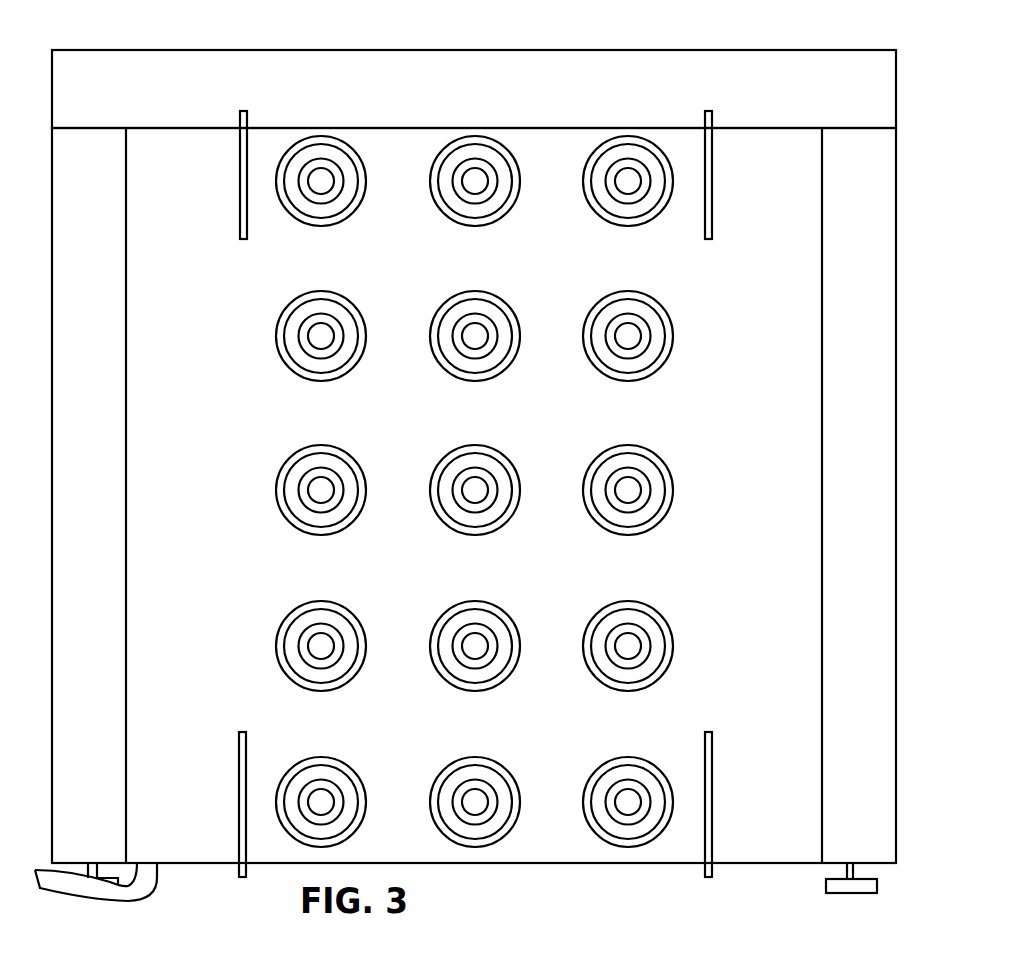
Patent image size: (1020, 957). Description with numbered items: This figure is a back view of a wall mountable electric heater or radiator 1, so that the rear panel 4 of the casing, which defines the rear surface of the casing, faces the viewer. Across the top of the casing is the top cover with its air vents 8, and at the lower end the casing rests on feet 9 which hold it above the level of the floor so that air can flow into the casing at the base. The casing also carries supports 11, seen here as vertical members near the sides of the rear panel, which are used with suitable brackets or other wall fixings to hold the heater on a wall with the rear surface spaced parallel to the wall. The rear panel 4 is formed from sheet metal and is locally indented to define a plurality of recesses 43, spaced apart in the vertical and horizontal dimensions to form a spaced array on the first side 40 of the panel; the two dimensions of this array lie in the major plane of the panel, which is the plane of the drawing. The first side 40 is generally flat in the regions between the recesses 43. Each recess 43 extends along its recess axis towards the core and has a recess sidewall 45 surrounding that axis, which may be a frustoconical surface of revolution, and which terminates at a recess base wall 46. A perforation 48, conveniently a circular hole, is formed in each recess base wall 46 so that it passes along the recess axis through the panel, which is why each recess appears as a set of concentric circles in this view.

The heater or radiator 1 is at (741, 29).
The air vents 8 is at (62, 86).
The feet 9 is at (852, 893).
The supports 11 is at (240, 189).
The rear panel 4 is at (692, 430).
The first side 40 is at (510, 491).
The recesses 43 is at (664, 488).
The recess sidewall 45 is at (646, 313).
The recess base wall 46 is at (645, 347).
The perforation 48 is at (633, 338).